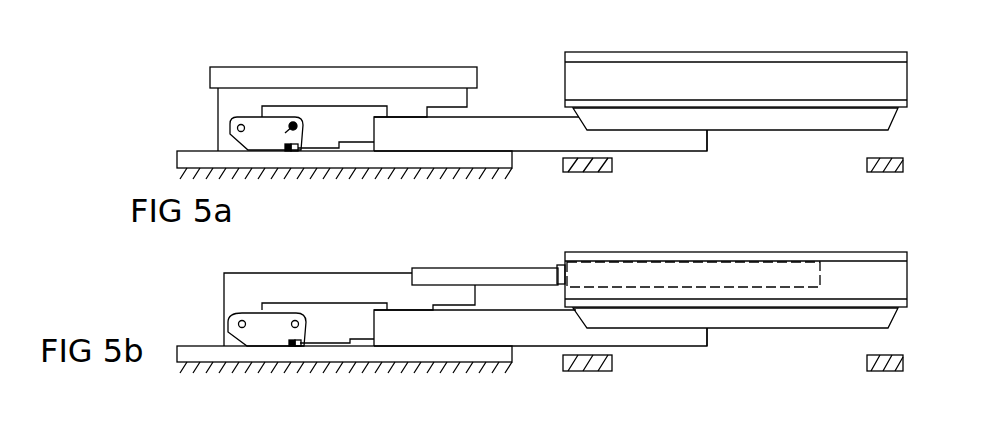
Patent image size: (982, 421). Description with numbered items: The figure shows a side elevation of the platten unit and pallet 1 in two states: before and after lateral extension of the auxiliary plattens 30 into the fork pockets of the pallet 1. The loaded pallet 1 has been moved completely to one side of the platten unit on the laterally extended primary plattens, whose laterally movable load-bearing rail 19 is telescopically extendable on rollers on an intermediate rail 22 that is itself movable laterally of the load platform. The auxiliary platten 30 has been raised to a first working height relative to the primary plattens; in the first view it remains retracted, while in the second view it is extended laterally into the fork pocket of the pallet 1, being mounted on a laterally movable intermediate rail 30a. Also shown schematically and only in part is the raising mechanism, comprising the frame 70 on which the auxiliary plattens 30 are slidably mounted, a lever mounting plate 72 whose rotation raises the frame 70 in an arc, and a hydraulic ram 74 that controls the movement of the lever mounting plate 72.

In FIG. 5A, the pallet 1 is at (650, 57).
In FIG. 5B, the pallet 1 is at (675, 248).
In FIG. 5A, the load-bearing rail 19 is at (715, 125).
In FIG. 5B, the load-bearing rail 19 is at (823, 315).
In FIG. 5A, the intermediate rail 22 is at (492, 133).
In FIG. 5B, the intermediate rail 22 is at (477, 330).
In FIG. 5A, the auxiliary platten 30 is at (313, 78).
In FIG. 5B, the auxiliary platten 30 is at (760, 268).
In FIG. 5B, the intermediate rail 30a is at (542, 275).
In FIG. 5A, the frame 70 is at (235, 107).
In FIG. 5B, the frame 70 is at (292, 295).
In FIG. 5A, the lever mounting plate 72 is at (303, 118).
In FIG. 5A, the hydraulic ram 74 is at (353, 145).